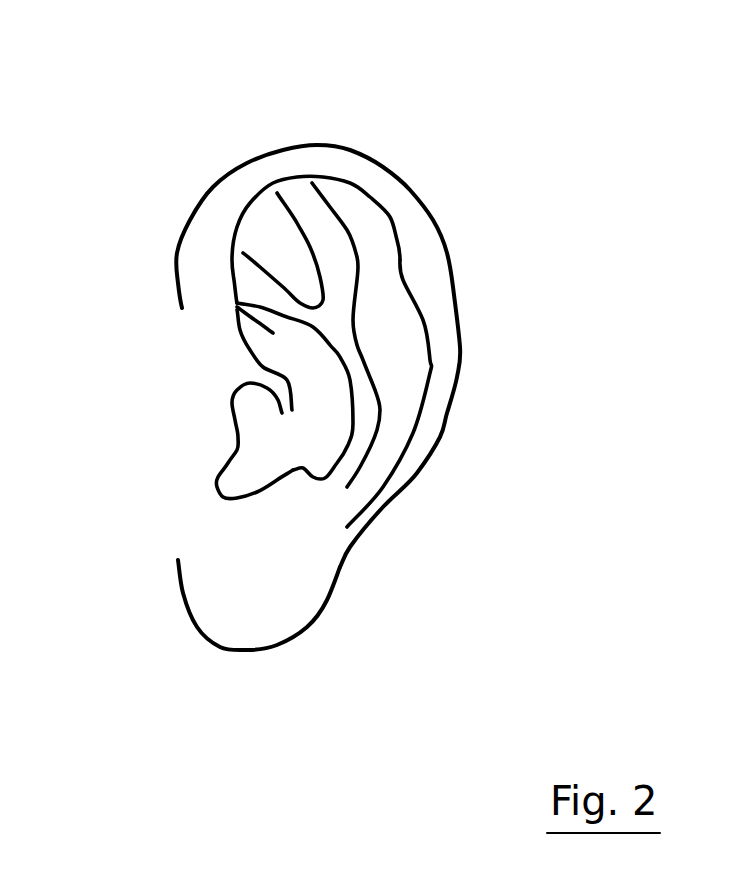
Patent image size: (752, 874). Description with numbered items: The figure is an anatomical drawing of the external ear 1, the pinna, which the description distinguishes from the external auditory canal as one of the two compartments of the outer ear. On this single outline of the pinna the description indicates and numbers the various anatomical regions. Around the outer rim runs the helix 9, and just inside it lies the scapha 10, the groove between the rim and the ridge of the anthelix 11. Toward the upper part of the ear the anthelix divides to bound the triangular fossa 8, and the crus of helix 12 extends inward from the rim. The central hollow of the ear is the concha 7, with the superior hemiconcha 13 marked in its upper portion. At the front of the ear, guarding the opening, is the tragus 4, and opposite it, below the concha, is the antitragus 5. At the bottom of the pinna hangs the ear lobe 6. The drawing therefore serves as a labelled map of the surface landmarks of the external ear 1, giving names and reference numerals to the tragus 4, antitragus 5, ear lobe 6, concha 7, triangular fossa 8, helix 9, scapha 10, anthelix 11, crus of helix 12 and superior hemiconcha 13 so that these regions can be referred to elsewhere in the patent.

The external ear 1 is at (300, 108).
The tragus 4 is at (250, 440).
The antitragus 5 is at (297, 490).
The ear lobe 6 is at (243, 595).
The concha 7 is at (325, 410).
The triangular fossa 8 is at (263, 220).
The helix 9 is at (373, 180).
The scapha 10 is at (393, 317).
The anthelix 11 is at (350, 367).
The crus of helix 12 is at (260, 377).
The superior hemiconcha 13 is at (237, 300).